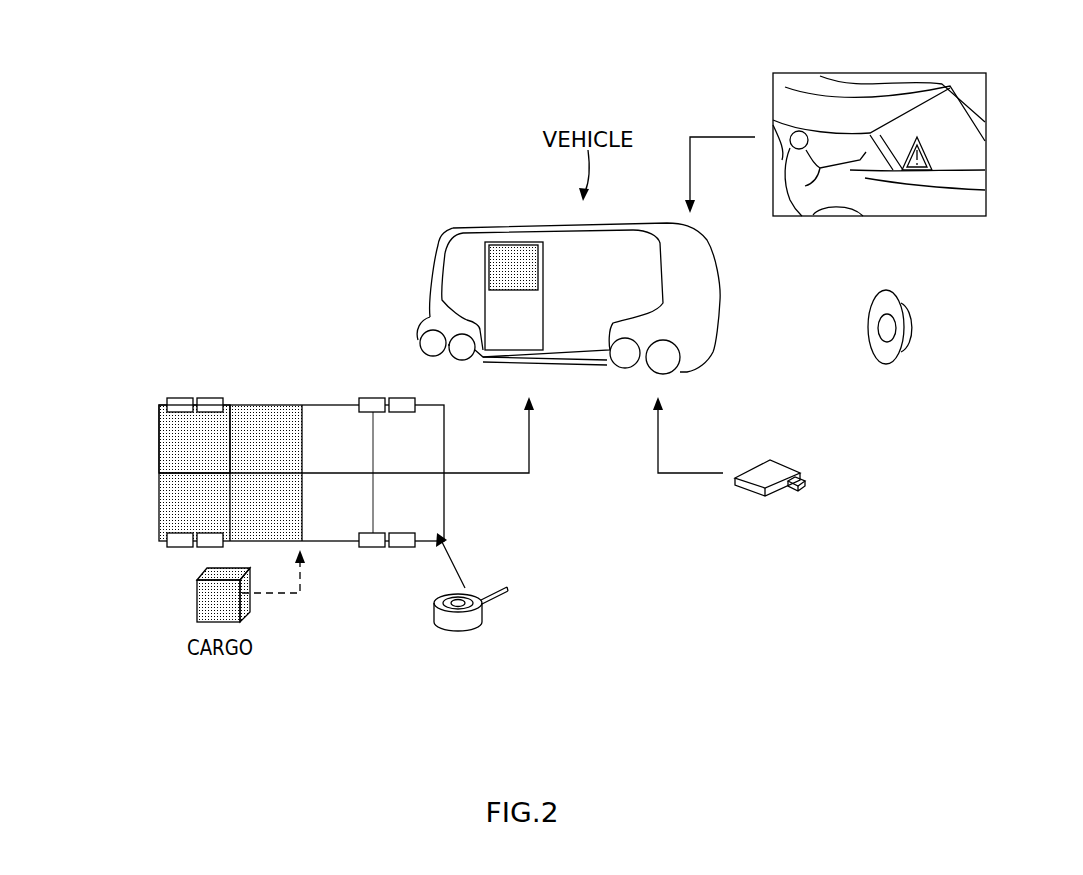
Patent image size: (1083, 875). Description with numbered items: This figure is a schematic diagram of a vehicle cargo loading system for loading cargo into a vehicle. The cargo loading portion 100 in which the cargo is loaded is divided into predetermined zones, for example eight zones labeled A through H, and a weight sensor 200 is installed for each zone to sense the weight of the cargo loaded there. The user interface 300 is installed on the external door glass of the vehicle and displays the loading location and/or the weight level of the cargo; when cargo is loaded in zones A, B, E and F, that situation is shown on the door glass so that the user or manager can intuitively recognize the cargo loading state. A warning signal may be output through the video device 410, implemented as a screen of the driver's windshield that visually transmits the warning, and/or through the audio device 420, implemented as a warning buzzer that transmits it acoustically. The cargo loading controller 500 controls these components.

The cargo loading portion 100 is at (145, 443).
The weight sensor 200 is at (482, 600).
The user interface 300 is at (490, 250).
The video device 410 is at (877, 73).
The audio device 420 is at (915, 327).
The cargo loading controller 500 is at (800, 473).